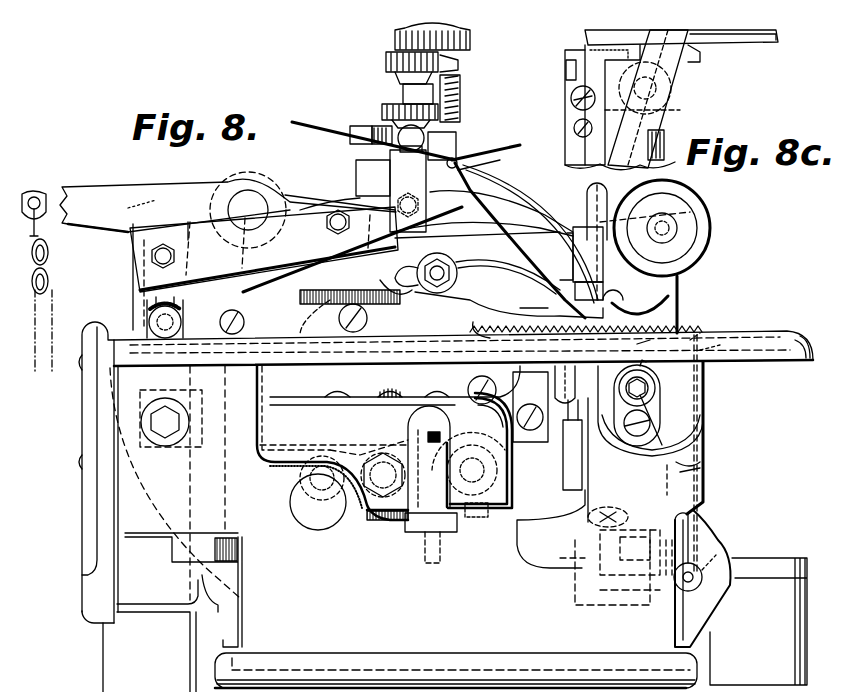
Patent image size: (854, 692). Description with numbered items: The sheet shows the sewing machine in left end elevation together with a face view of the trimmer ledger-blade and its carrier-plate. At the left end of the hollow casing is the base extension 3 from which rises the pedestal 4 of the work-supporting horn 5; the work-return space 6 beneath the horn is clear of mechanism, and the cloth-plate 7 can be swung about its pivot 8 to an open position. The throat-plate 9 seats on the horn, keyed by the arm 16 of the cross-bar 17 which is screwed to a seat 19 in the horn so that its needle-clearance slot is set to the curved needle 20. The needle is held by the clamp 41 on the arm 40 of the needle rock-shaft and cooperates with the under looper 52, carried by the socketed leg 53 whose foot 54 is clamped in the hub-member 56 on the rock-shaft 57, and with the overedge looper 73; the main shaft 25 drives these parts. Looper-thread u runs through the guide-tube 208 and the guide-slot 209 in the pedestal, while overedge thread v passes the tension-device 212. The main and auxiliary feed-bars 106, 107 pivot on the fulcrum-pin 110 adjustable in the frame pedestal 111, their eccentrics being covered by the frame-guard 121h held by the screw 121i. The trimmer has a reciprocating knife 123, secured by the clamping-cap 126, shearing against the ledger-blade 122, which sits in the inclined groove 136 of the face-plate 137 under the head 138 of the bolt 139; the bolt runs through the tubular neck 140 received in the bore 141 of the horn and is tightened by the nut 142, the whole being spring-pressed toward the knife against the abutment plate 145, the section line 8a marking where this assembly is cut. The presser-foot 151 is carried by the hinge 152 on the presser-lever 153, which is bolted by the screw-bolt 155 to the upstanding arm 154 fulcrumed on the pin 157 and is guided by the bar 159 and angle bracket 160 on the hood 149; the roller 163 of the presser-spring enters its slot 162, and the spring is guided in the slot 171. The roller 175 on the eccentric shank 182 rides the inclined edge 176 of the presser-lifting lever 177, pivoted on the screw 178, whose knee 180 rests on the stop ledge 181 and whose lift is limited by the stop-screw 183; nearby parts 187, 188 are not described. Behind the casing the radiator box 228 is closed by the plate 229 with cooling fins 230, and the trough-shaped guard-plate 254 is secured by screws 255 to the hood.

In FIG. 8, the base extension 3 is at (667, 622).
In FIG. 8, the pedestal 4 is at (680, 496).
In FIG. 8C, the pedestal 4 is at (672, 160).
In FIG. 8, the work-supporting horn 5 is at (690, 436).
In FIG. 8, the work-return space 6 is at (700, 456).
In FIG. 8, the cloth-plate 7 is at (768, 332).
In FIG. 8, the pivot 8 is at (240, 478).
In FIG. 8, the section line 8a is at (636, 478).
In FIG. 8, the throat-plate 9 is at (476, 328).
In FIG. 8C, the throat-plate 9 is at (758, 40).
In FIG. 8C, the arm 16 is at (600, 48).
In FIG. 8, the cross-bar 17 is at (722, 345).
In FIG. 8C, the cross-bar 17 is at (570, 70).
In FIG. 8, the seat 19 is at (700, 340).
In FIG. 8, the needle 20 is at (498, 268).
In FIG. 8, the main shaft 25 is at (512, 468).
In FIG. 8, the arm 40 is at (368, 320).
In FIG. 8, the clamp 41 is at (458, 268).
In FIG. 8, the under looper 52 is at (560, 386).
In FIG. 8, the socketed leg 53 is at (590, 463).
In FIG. 8, the foot 54 is at (615, 515).
In FIG. 8, the hub-member 56 is at (640, 550).
In FIG. 8, the rock-shaft 57 is at (595, 612).
In FIG. 8, the overedge looper 73 is at (540, 314).
In FIG. 8, the main feed-bar 106 is at (406, 394).
In FIG. 8, the auxiliary feed-bar 107 is at (528, 448).
In FIG. 8, the fulcrum-pin 110 is at (158, 452).
In FIG. 8, the frame pedestal 111 is at (258, 416).
In FIG. 8, the frame-guard 121h is at (533, 493).
In FIG. 8, the screw 121i is at (407, 425).
In FIG. 8C, the ledger-blade 122 is at (690, 46).
In FIG. 8, the trimmer-knife 123 is at (628, 278).
In FIG. 8, the clamping-cap 126 is at (590, 237).
In FIG. 8C, the inclined groove 136 is at (581, 139).
In FIG. 8C, the face-plate 137 is at (670, 100).
In FIG. 8C, the bolt head 138 is at (678, 88).
In FIG. 8, the bolt 139 is at (650, 430).
In FIG. 8C, the bolt 139 is at (672, 115).
In FIG. 8, the tubular neck 140 is at (660, 396).
In FIG. 8C, the tubular neck 140 is at (571, 100).
In FIG. 8, the horizontal bore 141 is at (656, 386).
In FIG. 8, the nut 142 is at (660, 412).
In FIG. 8, the abutment plate 145 is at (664, 424).
In FIG. 8, the frame hood 149 is at (318, 196).
In FIG. 8, the presser-foot 151 is at (625, 306).
In FIG. 8, the hinge 152 is at (502, 378).
In FIG. 8, the presser-lever 153 is at (508, 200).
In FIG. 8, the upstanding arm 154 is at (128, 258).
In FIG. 8, the screw-bolt 155 is at (150, 254).
In FIG. 8, the pin 157 is at (148, 318).
In FIG. 8, the bar 159 is at (400, 157).
In FIG. 8, the angle bracket 160 is at (440, 205).
In FIG. 8, the slot 162 is at (330, 268).
In FIG. 8, the roller 163 is at (420, 258).
In FIG. 8, the slot 171 is at (390, 180).
In FIG. 8, the roller 175 is at (326, 226).
In FIG. 8, the inclined upper edge portion 176 is at (310, 196).
In FIG. 8, the presser-lifting lever 177 is at (145, 190).
In FIG. 8, the screw 178 is at (248, 200).
In FIG. 8, the knee 180 is at (320, 324).
In FIG. 8, the stop ledge 181 is at (400, 286).
In FIG. 8, the eccentric shank 182 is at (320, 243).
In FIG. 8, the stop-screw 183 is at (362, 126).
In FIG. 8, the screw 187 is at (458, 160).
In FIG. 8, the washer 188 is at (472, 166).
In FIG. 8, the guide-tube 208 is at (702, 570).
In FIG. 8, the guide-slot 209 is at (700, 476).
In FIG. 8, the tension-device 212 is at (712, 215).
In FIG. 8, the oil-heat radiating sub-compartment 228 is at (154, 597).
In FIG. 8, the removable plate 229 is at (82, 610).
In FIG. 8, the heat-radiating fins 230 is at (82, 538).
In FIG. 8, the guard-plate 254 is at (320, 345).
In FIG. 8, the screws 255 is at (240, 334).
In FIG. 8, the under looper-thread u is at (700, 550).
In FIG. 8, the overedge looper-thread v is at (680, 280).